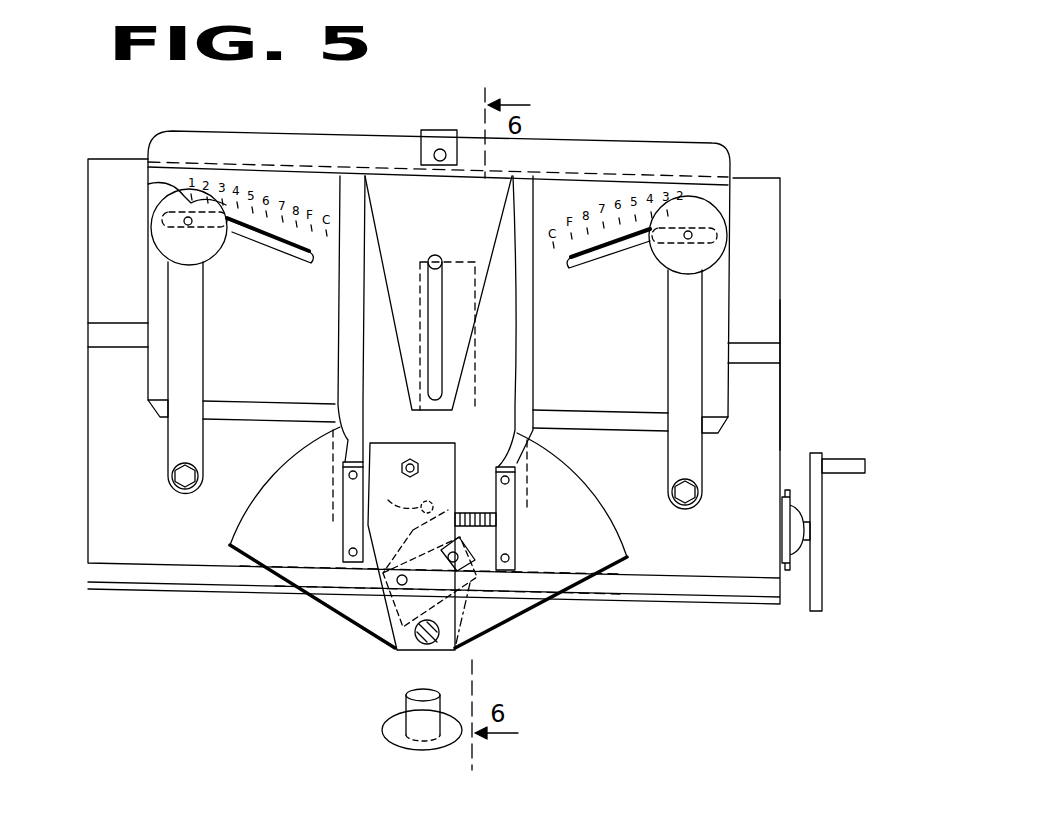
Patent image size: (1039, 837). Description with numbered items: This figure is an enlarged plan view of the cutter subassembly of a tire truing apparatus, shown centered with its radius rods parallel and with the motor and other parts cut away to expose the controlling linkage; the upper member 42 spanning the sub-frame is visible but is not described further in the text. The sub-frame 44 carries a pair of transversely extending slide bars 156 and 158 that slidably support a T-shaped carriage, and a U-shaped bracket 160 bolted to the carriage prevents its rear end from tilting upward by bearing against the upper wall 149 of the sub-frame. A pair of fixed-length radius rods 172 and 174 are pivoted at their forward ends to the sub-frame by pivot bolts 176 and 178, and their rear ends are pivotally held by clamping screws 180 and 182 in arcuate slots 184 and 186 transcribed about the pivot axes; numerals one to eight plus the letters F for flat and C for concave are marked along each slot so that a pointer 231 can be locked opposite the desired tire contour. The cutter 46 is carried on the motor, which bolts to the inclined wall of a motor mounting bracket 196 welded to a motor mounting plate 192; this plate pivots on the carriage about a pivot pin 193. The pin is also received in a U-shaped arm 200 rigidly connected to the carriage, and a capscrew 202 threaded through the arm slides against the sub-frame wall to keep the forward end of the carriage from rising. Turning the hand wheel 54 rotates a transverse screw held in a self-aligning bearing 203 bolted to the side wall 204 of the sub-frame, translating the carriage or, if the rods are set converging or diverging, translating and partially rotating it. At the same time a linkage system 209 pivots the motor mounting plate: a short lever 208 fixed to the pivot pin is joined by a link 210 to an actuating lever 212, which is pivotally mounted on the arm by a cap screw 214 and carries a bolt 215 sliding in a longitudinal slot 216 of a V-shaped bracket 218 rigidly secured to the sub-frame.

The fence bar 42 is at (724, 140).
The sub-frame 44 is at (716, 560).
The cutter 46 is at (380, 718).
The hand wheel 54 is at (812, 532).
The upper wall 149 is at (88, 502).
The slide bar 156 is at (750, 598).
The slide bar 158 is at (768, 349).
The U-shaped bracket 160 is at (424, 132).
The radius rod 172 is at (195, 293).
The radius rod 174 is at (668, 298).
The pivot bolt 176 is at (190, 478).
The pivot bolt 178 is at (679, 488).
The clamping screw 180 is at (160, 236).
The clamping screw 182 is at (706, 249).
The arcuate slot 184 is at (270, 239).
The arcuate slot 186 is at (596, 258).
The motor mounting plate 192 is at (582, 557).
The pivot pin 193 is at (420, 648).
The motor mounting bracket 196 is at (512, 513).
The U-shaped arm 200 is at (370, 529).
The capscrew 202 is at (410, 458).
The self-aligning bearing 203 is at (786, 525).
The side wall 204 is at (782, 392).
The short lever 208 is at (386, 633).
The linkage system 209 is at (460, 570).
The link 210 is at (343, 558).
The actuating lever 212 is at (470, 378).
The cap screw 214 is at (401, 496).
The bolt 215 is at (428, 270).
The slot 216 is at (442, 280).
The V-shaped bracket 218 is at (400, 283).
The pointer 231 is at (160, 186).